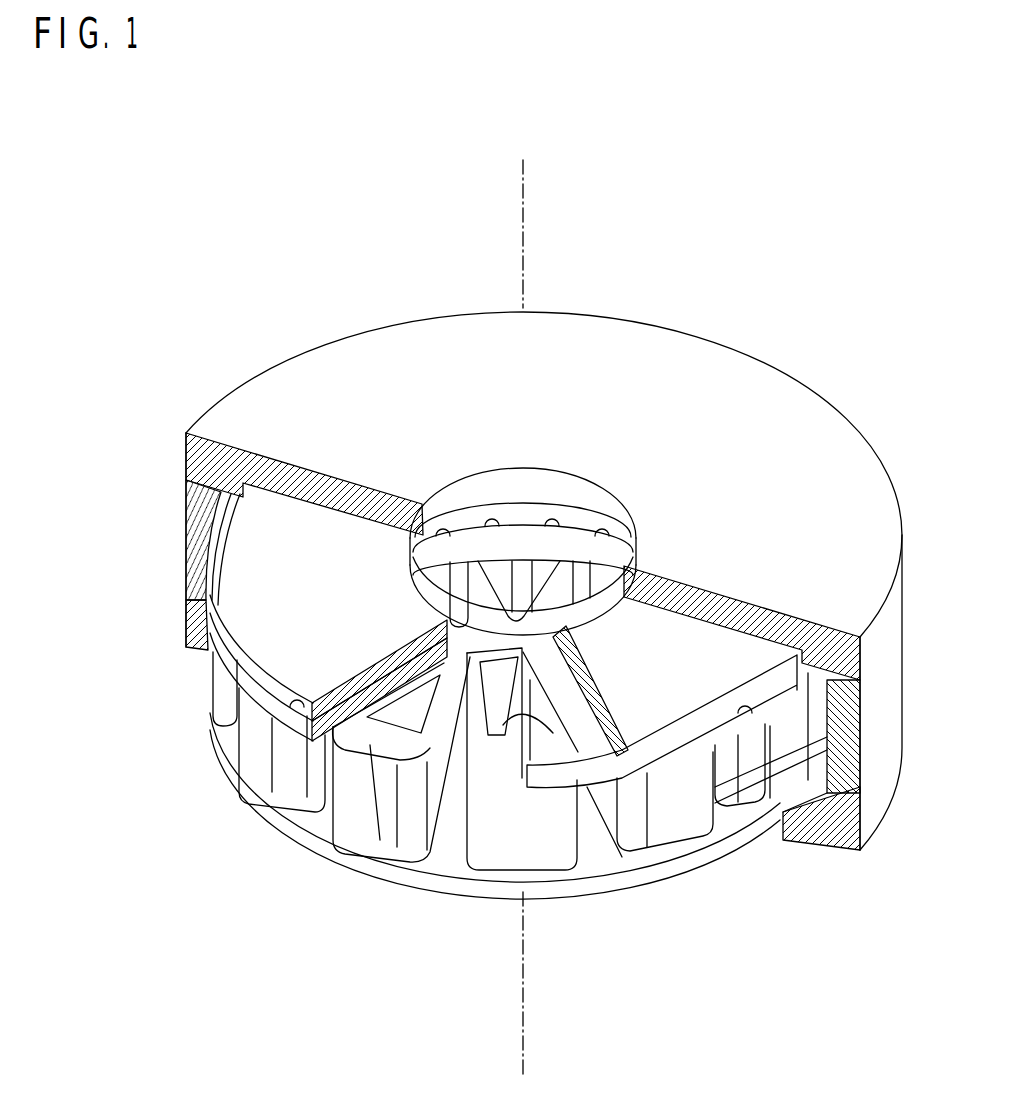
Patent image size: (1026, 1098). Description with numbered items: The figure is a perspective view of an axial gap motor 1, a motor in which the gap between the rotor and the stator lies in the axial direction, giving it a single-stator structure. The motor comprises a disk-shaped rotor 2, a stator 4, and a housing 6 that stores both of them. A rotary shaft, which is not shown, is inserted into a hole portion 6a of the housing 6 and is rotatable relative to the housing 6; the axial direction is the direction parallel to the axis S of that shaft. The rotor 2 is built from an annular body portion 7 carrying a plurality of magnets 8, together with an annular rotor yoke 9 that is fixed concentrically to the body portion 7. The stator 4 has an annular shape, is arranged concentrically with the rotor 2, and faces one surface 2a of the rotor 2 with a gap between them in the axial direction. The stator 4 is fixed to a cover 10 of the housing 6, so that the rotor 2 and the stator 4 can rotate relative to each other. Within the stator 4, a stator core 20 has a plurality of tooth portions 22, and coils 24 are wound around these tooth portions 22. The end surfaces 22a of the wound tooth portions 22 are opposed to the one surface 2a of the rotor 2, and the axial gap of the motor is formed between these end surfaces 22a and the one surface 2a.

The axial gap motor 1 is at (808, 187).
The axis S is at (527, 200).
The rotor 2 is at (221, 549).
The one surface 2a is at (226, 690).
The stator 4 is at (262, 812).
The housing 6 is at (328, 386).
The hole portion 6a is at (582, 500).
The body portion 7 is at (228, 653).
The magnets 8 is at (506, 722).
The rotor yoke 9 is at (233, 590).
The cover 10 is at (845, 810).
The stator core 20 is at (376, 863).
The tooth portions 22 is at (405, 716).
The end surfaces 22a is at (410, 712).
The coils 24 is at (357, 807).